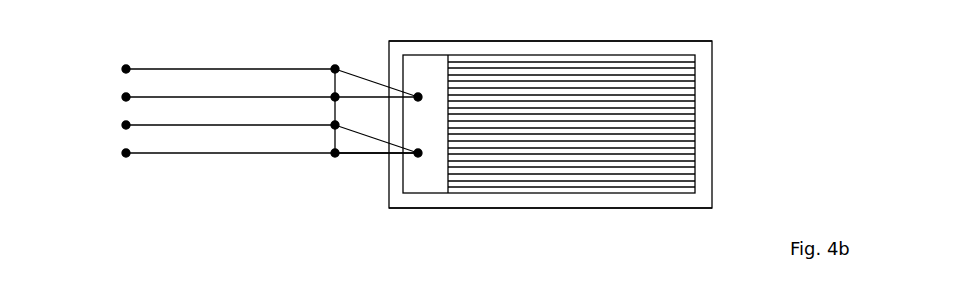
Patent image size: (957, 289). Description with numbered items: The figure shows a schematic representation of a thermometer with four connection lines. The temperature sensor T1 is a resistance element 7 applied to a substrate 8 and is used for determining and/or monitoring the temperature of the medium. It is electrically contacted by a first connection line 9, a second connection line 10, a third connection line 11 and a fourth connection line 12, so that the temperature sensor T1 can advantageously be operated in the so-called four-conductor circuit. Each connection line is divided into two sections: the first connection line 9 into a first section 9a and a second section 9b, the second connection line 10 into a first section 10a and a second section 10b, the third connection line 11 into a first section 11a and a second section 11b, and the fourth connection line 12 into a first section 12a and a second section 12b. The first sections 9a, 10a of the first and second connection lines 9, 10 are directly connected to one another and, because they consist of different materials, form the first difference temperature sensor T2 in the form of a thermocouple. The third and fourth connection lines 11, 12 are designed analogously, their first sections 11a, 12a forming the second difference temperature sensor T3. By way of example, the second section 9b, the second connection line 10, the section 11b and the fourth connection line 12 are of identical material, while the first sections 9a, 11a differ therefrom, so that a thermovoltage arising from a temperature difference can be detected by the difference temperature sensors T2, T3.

The resistance element 7 is at (648, 165).
The substrate 8 is at (702, 192).
The first connection line 9 is at (270, 58).
The first section of the first connection line 9a is at (376, 76).
The second section of the first connection line 9b is at (228, 60).
The second connection line 10 is at (240, 91).
The first section of the second connection line 10a is at (374, 89).
The second section of the second connection line 10b is at (228, 88).
The third connection line 11 is at (242, 129).
The first section of the third connection line 11a is at (376, 133).
The second section of the third connection line 11b is at (228, 115).
The fourth connection line 12 is at (245, 163).
The first section of the fourth connection line 12a is at (374, 146).
The second section of the fourth connection line 12b is at (228, 143).
The temperature sensor T1 is at (510, 20).
The first difference temperature sensor T2 is at (340, 43).
The second difference temperature sensor T3 is at (355, 163).